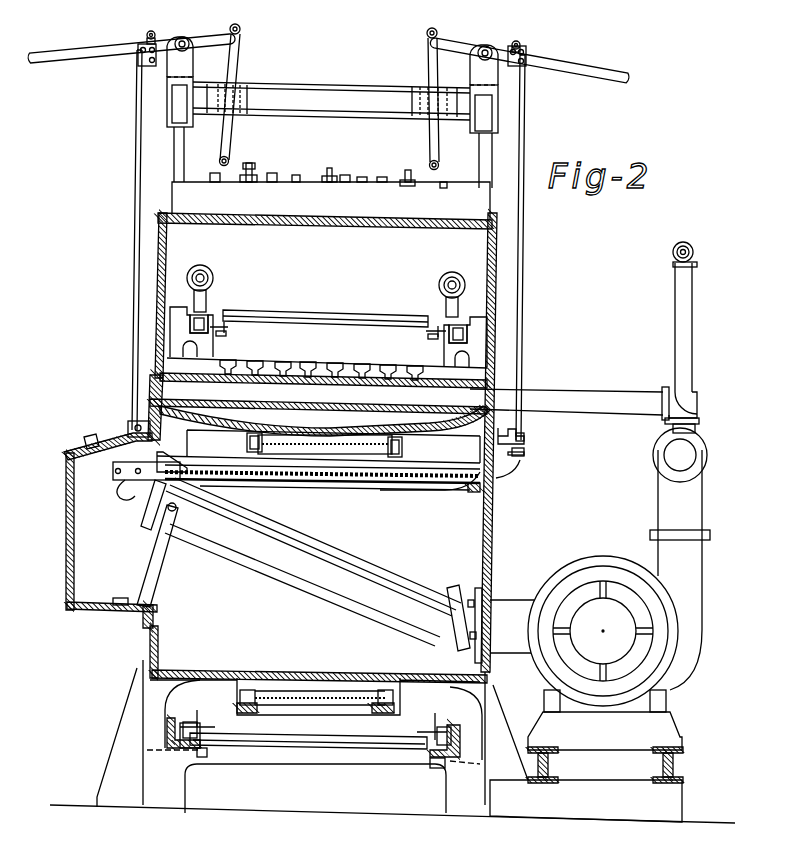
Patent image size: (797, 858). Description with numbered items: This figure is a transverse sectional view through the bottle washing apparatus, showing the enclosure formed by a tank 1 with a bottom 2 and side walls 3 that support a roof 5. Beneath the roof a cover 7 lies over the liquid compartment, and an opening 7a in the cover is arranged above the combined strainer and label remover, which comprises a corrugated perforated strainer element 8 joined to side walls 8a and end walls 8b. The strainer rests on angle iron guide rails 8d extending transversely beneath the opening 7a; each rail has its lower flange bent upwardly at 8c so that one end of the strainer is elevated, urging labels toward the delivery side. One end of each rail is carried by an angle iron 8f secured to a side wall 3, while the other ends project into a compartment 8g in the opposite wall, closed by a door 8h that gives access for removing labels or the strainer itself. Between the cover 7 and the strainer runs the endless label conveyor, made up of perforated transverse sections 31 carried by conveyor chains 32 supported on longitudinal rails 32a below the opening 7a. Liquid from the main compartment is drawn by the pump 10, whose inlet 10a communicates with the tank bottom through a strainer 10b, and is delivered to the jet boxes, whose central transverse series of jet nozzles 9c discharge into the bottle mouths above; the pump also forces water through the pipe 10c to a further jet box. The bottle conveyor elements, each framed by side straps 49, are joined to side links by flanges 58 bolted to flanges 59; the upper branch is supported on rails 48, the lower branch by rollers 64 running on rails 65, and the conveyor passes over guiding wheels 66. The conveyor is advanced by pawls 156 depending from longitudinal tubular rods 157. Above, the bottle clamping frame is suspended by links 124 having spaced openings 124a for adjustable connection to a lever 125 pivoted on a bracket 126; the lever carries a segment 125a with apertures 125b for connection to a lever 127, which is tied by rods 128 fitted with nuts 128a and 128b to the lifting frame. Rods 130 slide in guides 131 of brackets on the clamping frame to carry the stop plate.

The tank 1 is at (207, 639).
The bottom 2 is at (279, 671).
The side walls 3 is at (492, 547).
The roof 5 is at (319, 224).
The cover 7 is at (435, 430).
The opening 7a is at (318, 437).
The perforated strainer element 8 is at (357, 485).
The side walls 8a is at (173, 457).
The end walls 8b is at (278, 484).
The upwardly bent flange 8c is at (429, 491).
The angle iron guide rails 8d is at (113, 472).
The angle iron 8f is at (475, 493).
The compartment 8g is at (67, 544).
The door 8h is at (113, 435).
The jet nozzles 9c is at (350, 376).
The pump 10 is at (608, 560).
The inlet 10a is at (512, 599).
The strainer 10b is at (413, 597).
The pipe 10c is at (693, 332).
The perforated transverse sections 31 is at (277, 448).
The conveyor chains 32 is at (246, 442).
The rails 32a is at (400, 447).
The rails 48 is at (190, 336).
The side straps 49 is at (313, 319).
The flanges 58 is at (413, 730).
The flanges 59 is at (317, 538).
The roller 64 is at (205, 744).
The rails 65 is at (205, 757).
The guiding and supporting wheels 66 is at (440, 772).
The links 124 is at (240, 53).
The openings 124a is at (241, 28).
The lever 125 is at (207, 34).
The segment 125a is at (147, 37).
The apertures 125b is at (153, 31).
The bracket 126 is at (190, 58).
The lever 127 is at (138, 63).
The rods 128 is at (134, 212).
The nuts 128a is at (525, 437).
The nuts 128b is at (527, 453).
The rods 130 is at (250, 171).
The guides 131 is at (317, 167).
The pawls 156 is at (207, 305).
The rods 157 is at (214, 276).